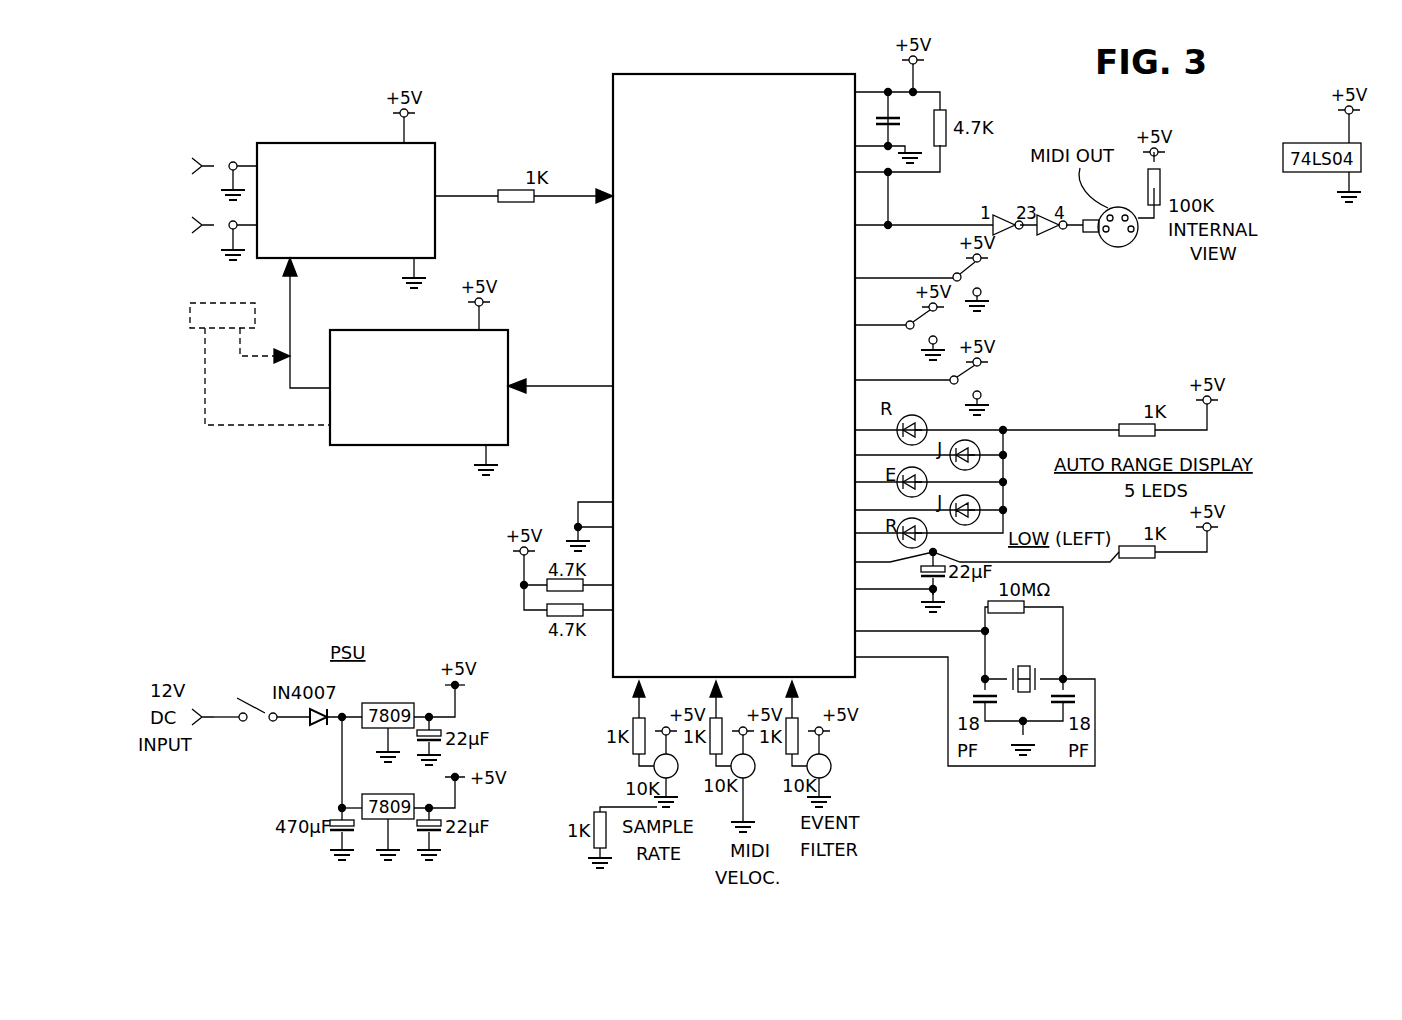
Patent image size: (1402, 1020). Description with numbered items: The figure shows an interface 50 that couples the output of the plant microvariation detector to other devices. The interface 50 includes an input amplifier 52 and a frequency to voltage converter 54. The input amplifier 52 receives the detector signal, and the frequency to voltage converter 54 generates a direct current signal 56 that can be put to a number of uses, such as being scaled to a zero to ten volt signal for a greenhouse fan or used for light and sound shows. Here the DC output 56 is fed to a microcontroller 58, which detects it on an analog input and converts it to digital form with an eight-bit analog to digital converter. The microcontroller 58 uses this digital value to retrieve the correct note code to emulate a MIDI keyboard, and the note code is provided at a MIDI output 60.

The interface 50 is at (287, 477).
The input amplifier 52 is at (437, 173).
The frequency to voltage converter 54 is at (437, 447).
The DC signal 56 is at (560, 382).
The microcontroller 58 is at (842, 678).
The MIDI output 60 is at (1223, 303).